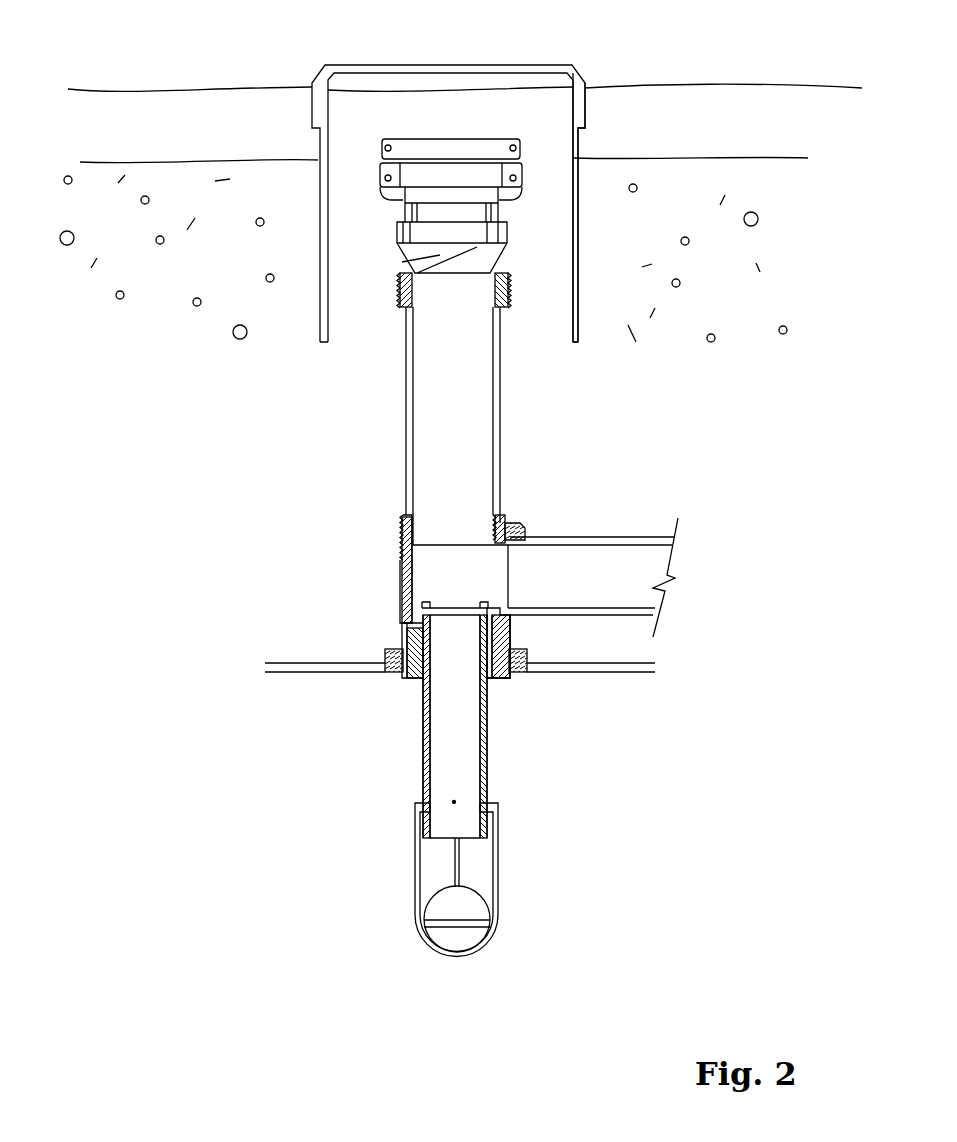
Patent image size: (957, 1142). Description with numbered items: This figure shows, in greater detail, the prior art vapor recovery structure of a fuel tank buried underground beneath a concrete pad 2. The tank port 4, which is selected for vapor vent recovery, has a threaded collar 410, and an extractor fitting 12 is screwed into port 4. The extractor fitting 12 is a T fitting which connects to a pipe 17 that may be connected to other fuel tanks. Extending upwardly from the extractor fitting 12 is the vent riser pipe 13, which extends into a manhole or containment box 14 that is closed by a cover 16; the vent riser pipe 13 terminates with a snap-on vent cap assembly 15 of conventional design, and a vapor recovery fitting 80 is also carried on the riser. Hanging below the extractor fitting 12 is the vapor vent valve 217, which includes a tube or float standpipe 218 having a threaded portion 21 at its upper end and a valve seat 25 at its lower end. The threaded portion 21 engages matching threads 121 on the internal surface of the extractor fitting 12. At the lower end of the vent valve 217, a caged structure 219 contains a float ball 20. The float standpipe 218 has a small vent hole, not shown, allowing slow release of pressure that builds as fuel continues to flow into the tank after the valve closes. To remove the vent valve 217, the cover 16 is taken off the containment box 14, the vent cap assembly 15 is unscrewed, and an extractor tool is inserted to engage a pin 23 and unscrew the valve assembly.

The concrete pad 2 is at (787, 160).
The port 4 is at (500, 673).
The extractor fitting 12 is at (513, 522).
The vent riser pipe 13 is at (500, 422).
The containment box 14 is at (578, 155).
The vent cap assembly 15 is at (478, 138).
The cover 16 is at (407, 63).
The pipe 17 is at (603, 535).
The float ball 20 is at (462, 940).
The threaded portion 21 is at (403, 622).
The pin 23 is at (447, 605).
The valve seat 25 is at (428, 840).
The vapor recovery fitting 80 is at (512, 280).
The threads 121 is at (407, 640).
The vapor vent valve 217 is at (487, 747).
The float standpipe 218 is at (425, 755).
The caged structure 219 is at (415, 858).
The threaded collar 410 is at (523, 652).